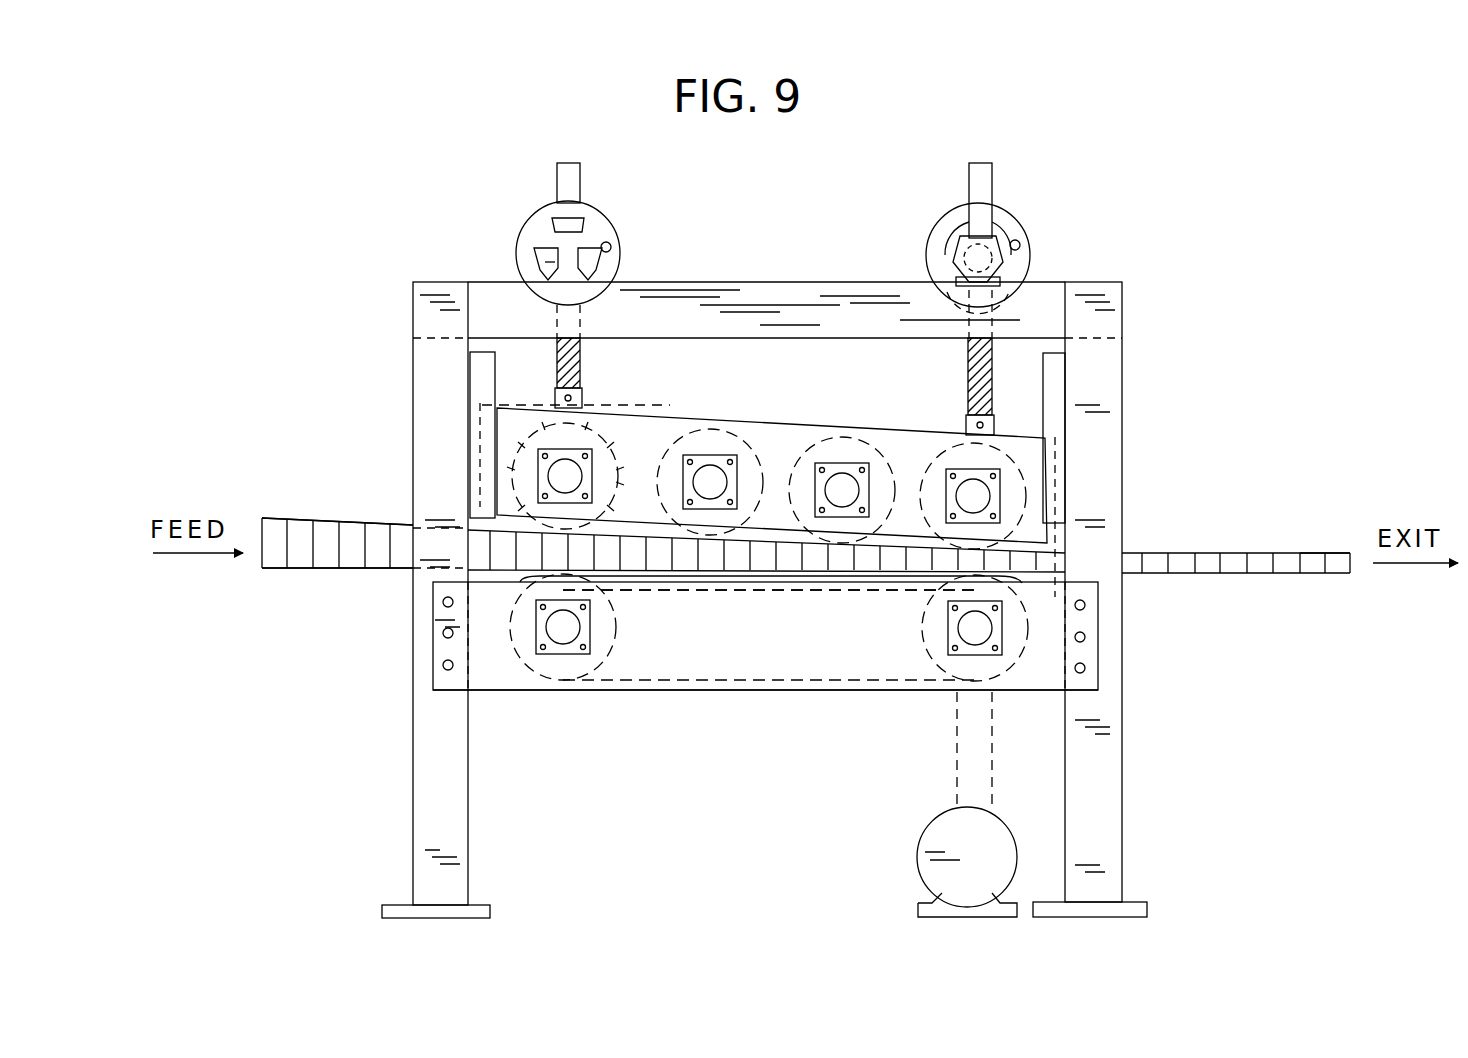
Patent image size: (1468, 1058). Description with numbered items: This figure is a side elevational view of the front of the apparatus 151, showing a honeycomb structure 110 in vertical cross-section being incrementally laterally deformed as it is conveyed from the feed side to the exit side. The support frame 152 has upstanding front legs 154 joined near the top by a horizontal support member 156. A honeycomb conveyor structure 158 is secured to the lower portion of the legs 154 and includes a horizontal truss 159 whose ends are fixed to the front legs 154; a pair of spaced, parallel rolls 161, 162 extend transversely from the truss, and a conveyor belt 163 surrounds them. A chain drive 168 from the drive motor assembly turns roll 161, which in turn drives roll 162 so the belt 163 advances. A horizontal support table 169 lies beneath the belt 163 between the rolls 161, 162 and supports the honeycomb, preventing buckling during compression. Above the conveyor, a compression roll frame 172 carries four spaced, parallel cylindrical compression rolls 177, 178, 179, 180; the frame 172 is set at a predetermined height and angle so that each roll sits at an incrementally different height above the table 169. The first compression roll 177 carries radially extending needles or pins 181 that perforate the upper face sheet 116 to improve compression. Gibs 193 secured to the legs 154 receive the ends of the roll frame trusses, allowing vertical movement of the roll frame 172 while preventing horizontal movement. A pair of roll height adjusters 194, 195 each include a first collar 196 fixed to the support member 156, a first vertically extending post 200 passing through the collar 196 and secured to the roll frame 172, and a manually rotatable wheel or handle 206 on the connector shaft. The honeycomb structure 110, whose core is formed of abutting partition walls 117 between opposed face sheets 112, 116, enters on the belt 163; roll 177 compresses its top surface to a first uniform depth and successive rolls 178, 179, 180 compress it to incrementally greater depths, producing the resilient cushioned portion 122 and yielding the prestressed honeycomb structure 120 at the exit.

The conditioned honeycomb structure 110 is at (794, 566).
The face sheet 112 is at (327, 568).
The face sheet 116 is at (327, 520).
The partition walls 117 is at (302, 532).
The prestressed honeycomb structure 120 is at (1317, 577).
The resilient cushioned portion 122 is at (720, 574).
The apparatus 151 is at (746, 238).
The support frame 152 is at (424, 779).
The front legs 154 is at (1100, 827).
The horizontal support member 156 is at (802, 300).
The honeycomb conveyor structure 158 is at (746, 662).
The horizontal truss 159 is at (778, 690).
The roll 161 is at (1013, 668).
The roll 162 is at (570, 672).
The conveyor belt 163 is at (1035, 627).
The chain drive 168 is at (957, 755).
The horizontal support table 169 is at (857, 580).
The compression roll frame 172 is at (1040, 456).
The compression roll 177 is at (517, 463).
The compression roll 178 is at (760, 427).
The compression roll 179 is at (867, 430).
The compression roll 180 is at (962, 436).
The needles or pins 181 is at (524, 432).
The gib 193 is at (483, 382).
The roll height adjuster 194 is at (995, 188).
The roll height adjuster 195 is at (552, 180).
The first collar 196 is at (540, 262).
The first vertically extending post 200 is at (590, 360).
The wheel or handle 206 is at (608, 238).